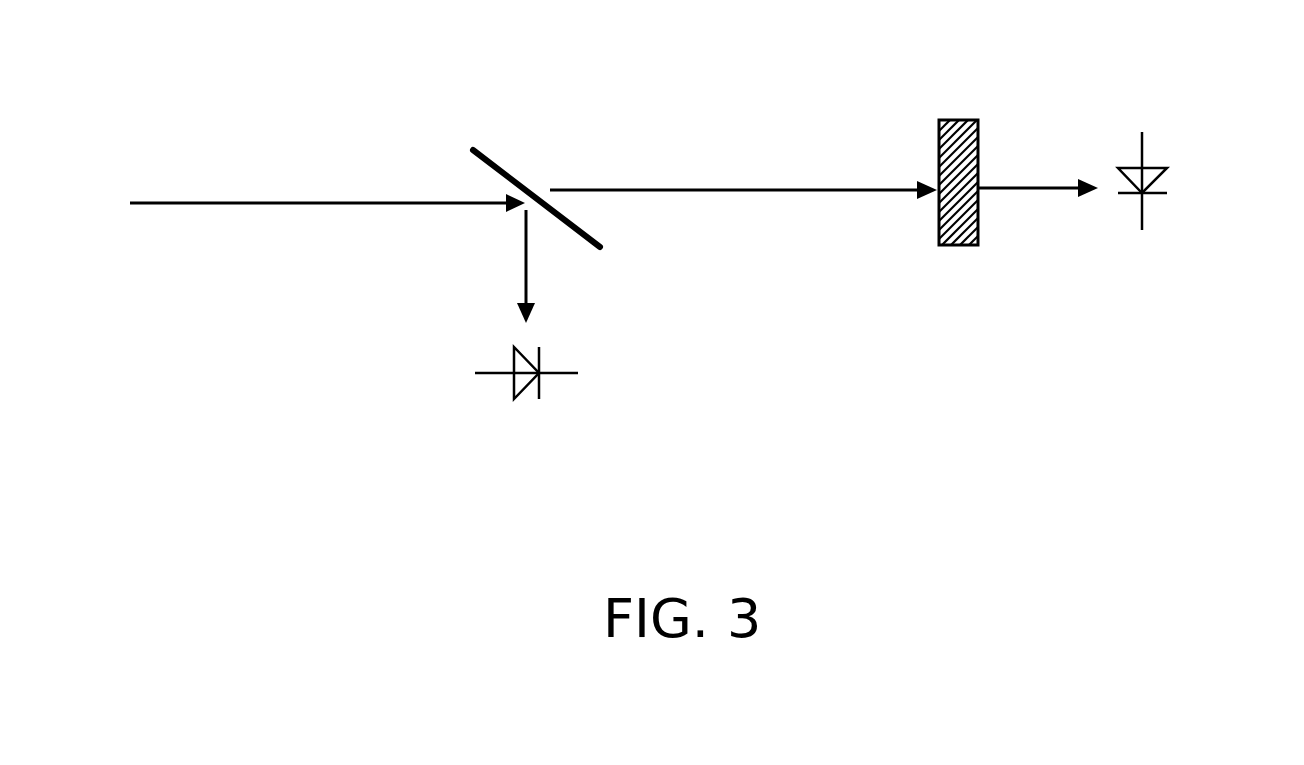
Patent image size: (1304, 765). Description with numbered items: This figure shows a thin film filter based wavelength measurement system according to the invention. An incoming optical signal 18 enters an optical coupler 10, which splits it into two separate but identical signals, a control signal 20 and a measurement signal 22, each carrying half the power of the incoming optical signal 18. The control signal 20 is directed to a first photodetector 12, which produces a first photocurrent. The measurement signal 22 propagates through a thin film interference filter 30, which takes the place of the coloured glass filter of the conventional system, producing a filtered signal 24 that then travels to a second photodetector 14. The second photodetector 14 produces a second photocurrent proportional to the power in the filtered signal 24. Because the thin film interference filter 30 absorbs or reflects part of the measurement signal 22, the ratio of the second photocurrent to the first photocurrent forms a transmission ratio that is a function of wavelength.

The optical coupler 10 is at (480, 150).
The photodetector 12 is at (550, 385).
The photodetector 14 is at (1173, 180).
The incoming optical signal 18 is at (277, 203).
The control signal 20 is at (523, 270).
The measurement signal 22 is at (723, 190).
The filtered signal 24 is at (1048, 188).
The thin film interference filter 30 is at (978, 220).